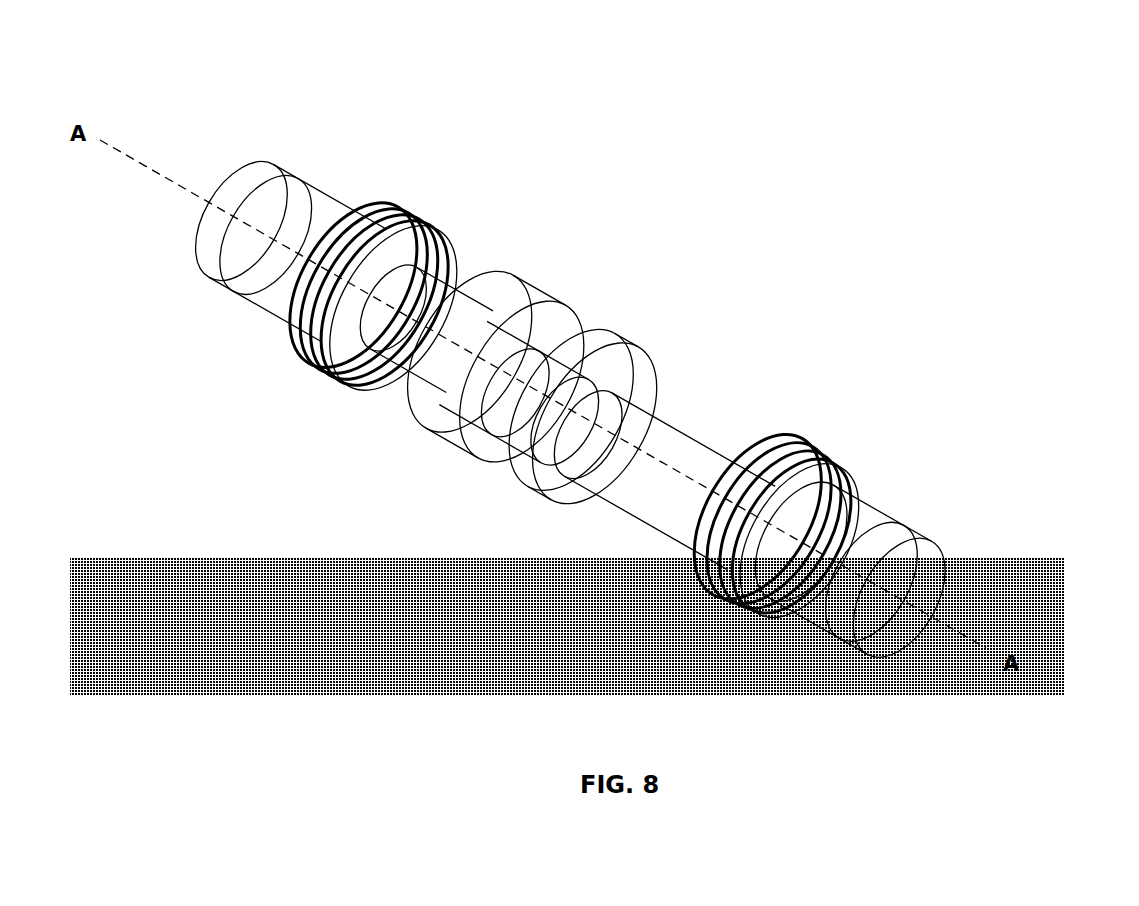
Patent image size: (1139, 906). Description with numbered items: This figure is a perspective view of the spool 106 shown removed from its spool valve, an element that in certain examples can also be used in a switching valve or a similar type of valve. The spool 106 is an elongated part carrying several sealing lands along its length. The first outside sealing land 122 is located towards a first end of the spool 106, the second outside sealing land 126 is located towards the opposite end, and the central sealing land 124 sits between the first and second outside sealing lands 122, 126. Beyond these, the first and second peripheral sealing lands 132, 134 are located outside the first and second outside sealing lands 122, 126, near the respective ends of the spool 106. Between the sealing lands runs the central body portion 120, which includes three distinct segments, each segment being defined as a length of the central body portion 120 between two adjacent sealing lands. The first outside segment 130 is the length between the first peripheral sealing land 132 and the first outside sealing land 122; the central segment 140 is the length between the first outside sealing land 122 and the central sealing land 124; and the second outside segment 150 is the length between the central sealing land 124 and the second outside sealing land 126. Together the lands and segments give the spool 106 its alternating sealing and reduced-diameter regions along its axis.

The spool 106 is at (220, 86).
The central body portion 120 is at (547, 343).
The first outside sealing land 122 is at (505, 295).
The central sealing land 124 is at (594, 345).
The second outside sealing land 126 is at (711, 438).
The first outside segment 130 is at (390, 328).
The first peripheral sealing land 132 is at (393, 214).
The second peripheral sealing land 134 is at (790, 457).
The central segment 140 is at (500, 403).
The second outside segment 150 is at (617, 460).